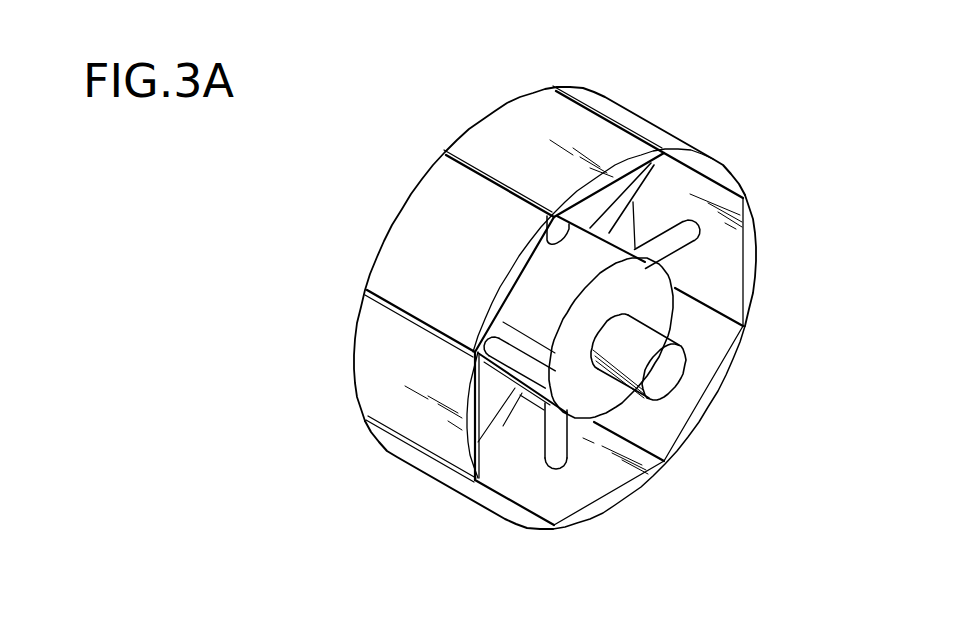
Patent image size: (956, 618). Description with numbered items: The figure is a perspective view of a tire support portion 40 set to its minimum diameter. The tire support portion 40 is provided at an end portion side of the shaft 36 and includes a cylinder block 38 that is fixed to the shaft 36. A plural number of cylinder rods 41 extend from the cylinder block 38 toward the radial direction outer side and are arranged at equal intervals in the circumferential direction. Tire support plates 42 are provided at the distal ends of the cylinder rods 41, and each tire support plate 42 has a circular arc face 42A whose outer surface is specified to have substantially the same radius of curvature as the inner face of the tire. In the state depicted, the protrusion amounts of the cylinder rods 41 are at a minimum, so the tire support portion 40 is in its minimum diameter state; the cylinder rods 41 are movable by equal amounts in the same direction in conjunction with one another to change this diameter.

The tire support portion 40 is at (381, 133).
The circular arc face 42A is at (437, 242).
The tire support plate 42 is at (708, 396).
The cylinder block 38 is at (650, 311).
The shaft 36 is at (660, 379).
The cylinder rod 41 is at (664, 246).